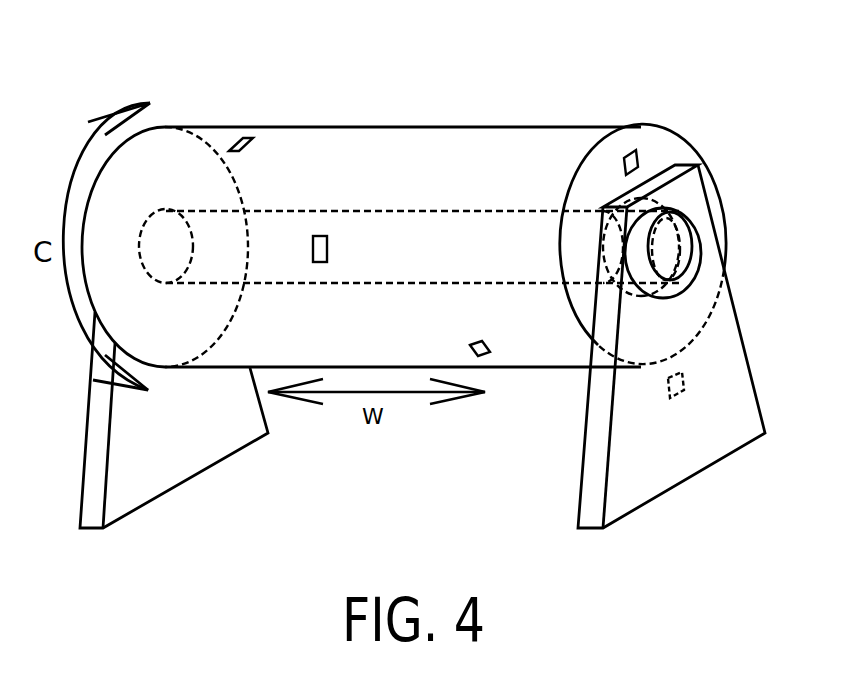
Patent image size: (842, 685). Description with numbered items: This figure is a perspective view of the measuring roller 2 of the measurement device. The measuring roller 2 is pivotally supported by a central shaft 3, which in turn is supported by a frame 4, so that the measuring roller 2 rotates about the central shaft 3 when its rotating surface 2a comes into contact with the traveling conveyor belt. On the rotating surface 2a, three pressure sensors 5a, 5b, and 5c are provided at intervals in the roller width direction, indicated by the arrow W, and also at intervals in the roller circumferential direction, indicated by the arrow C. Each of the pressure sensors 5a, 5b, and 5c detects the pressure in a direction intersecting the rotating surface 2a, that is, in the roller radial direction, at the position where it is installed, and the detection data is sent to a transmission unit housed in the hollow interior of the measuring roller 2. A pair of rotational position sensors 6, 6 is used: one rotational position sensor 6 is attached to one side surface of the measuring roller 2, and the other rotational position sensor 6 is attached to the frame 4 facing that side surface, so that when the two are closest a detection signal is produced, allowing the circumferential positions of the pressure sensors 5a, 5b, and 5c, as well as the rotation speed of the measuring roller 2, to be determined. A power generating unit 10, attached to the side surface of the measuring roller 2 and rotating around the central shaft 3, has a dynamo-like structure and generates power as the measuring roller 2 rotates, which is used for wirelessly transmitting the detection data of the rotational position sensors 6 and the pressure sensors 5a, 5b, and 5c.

The measuring roller 2 is at (514, 128).
The rotating surface 2a is at (405, 138).
The central shaft 3 is at (682, 226).
The frame 4 is at (227, 440).
The pressure sensor 5a is at (238, 140).
The pressure sensor 5b is at (318, 236).
The pressure sensor 5c is at (470, 345).
The rotational position sensor 6 is at (634, 150).
The power generating unit 10 is at (600, 249).